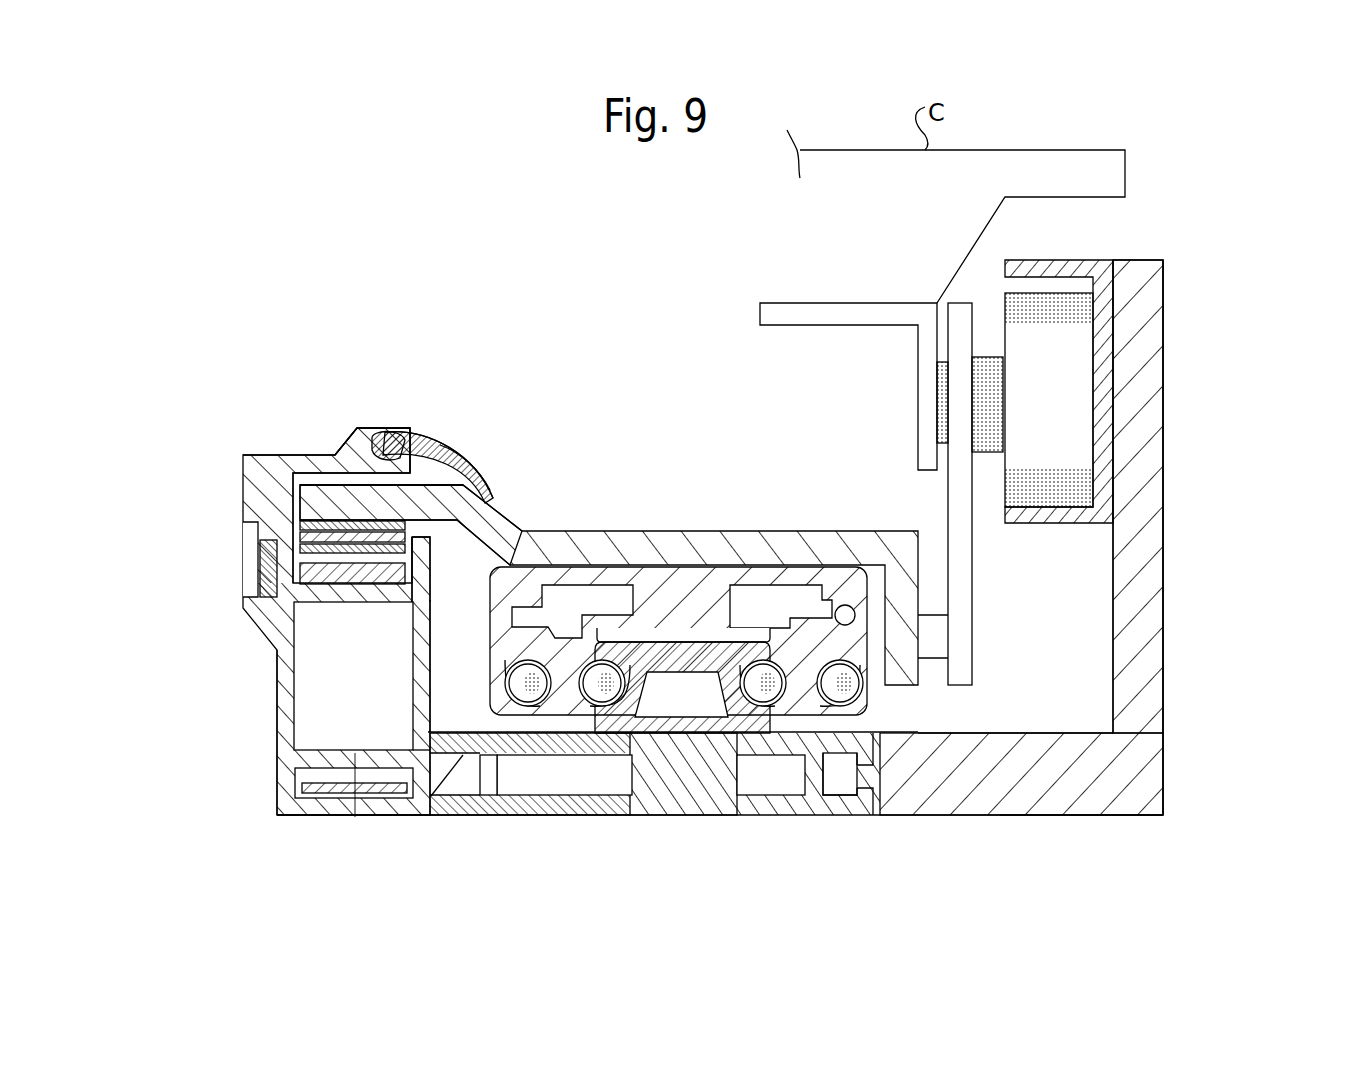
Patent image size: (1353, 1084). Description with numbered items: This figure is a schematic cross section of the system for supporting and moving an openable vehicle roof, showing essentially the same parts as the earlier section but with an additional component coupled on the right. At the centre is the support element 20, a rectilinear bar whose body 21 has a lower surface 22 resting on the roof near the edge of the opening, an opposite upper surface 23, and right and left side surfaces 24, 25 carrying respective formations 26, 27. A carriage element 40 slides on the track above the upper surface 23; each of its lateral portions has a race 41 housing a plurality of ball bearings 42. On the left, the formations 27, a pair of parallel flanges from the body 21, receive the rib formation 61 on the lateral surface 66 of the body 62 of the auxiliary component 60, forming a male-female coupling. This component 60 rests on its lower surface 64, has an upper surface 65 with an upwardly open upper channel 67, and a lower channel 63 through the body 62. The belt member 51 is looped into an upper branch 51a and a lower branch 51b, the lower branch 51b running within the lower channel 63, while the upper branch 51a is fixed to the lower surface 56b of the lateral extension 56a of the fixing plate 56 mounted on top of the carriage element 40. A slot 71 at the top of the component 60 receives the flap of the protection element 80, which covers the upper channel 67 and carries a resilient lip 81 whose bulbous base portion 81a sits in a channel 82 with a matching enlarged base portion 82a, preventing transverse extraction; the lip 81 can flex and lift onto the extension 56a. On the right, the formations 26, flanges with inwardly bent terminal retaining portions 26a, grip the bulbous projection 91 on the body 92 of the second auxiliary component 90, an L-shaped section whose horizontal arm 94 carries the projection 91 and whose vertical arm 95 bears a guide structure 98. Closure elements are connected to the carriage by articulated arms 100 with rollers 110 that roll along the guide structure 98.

The support element 20 is at (875, 726).
The body 21 is at (700, 817).
The lower surface 22 is at (597, 817).
The upper surface 23 is at (428, 717).
The right side surface 24 is at (880, 817).
The left side surface 25 is at (423, 817).
The formations 26 is at (920, 817).
The terminal retaining portions 26a is at (888, 817).
The formations 27 is at (495, 820).
The carriage element 40 is at (875, 608).
The race 41 is at (858, 710).
The ball bearings 42 is at (817, 550).
The belt member 51 is at (330, 500).
The upper branch 51a is at (330, 515).
The lower branch 51b is at (306, 792).
The fixing plate 56 is at (843, 606).
The lateral extension 56a is at (457, 460).
The lower surface 56b is at (430, 484).
The auxiliary component 60 is at (265, 692).
The formation 61 is at (500, 778).
The body 62 is at (283, 742).
The lower channel 63 is at (243, 809).
The lower surface 64 is at (325, 800).
The upper surface 65 is at (247, 623).
The lateral surface 66 is at (433, 648).
The upper channel 67 is at (407, 555).
The slot 71 is at (247, 498).
The protection element 80 is at (262, 447).
The lip 81 is at (262, 567).
The bulbous base portion 81a is at (387, 440).
The channel 82 is at (407, 430).
The enlarged base portion 82a is at (387, 453).
The second auxiliary component 90 is at (1180, 592).
The formations 91 is at (783, 817).
The body 92 is at (1090, 817).
The arm 94 is at (1040, 817).
The arm 95 is at (1165, 470).
The guide structure 98 is at (1052, 278).
The articulated arms 100 is at (973, 527).
The rollers 110 is at (1108, 340).